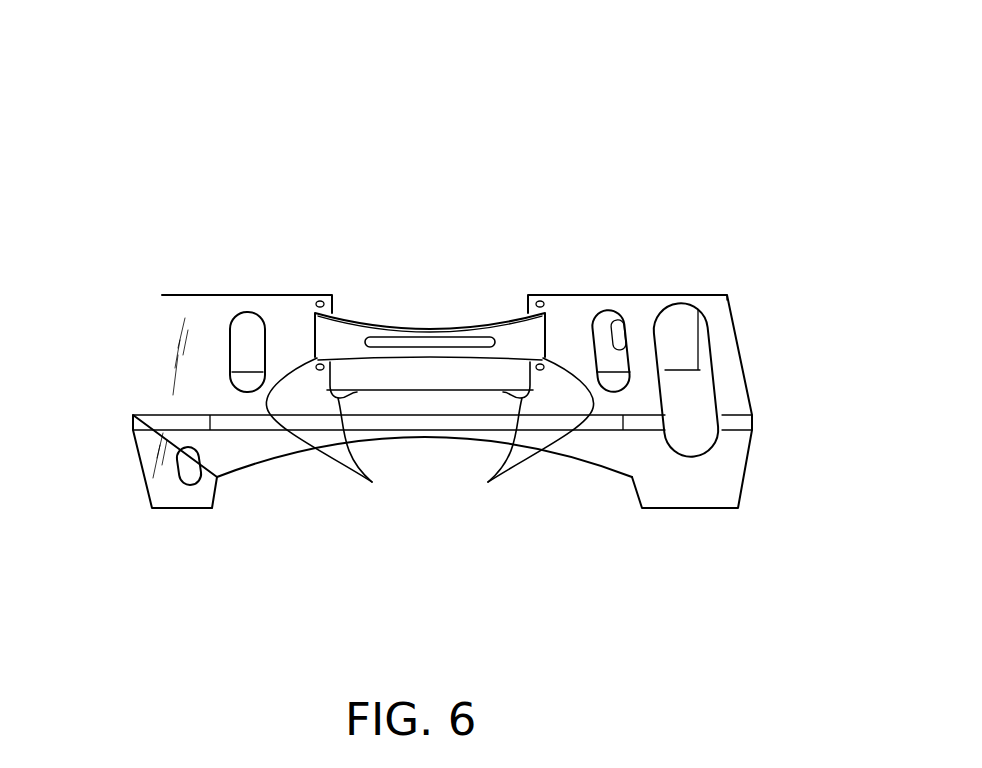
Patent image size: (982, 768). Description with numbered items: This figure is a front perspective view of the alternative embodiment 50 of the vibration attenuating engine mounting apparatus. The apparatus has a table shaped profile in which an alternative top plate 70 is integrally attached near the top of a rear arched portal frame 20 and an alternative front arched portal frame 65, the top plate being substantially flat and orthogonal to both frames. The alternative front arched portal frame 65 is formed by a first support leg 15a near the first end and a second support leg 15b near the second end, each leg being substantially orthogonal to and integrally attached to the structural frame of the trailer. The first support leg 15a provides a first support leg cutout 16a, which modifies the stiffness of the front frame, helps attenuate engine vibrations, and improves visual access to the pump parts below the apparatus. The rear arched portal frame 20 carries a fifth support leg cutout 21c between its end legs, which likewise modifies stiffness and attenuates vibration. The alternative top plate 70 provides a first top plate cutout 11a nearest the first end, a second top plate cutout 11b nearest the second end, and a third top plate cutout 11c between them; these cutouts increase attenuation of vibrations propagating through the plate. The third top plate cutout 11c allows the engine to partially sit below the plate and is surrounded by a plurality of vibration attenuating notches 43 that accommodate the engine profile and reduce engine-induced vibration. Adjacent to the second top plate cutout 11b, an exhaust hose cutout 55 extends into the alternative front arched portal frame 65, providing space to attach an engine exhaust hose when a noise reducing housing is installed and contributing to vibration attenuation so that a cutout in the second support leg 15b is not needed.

The alternative embodiment 50 is at (163, 85).
The alternative top plate 70 is at (185, 305).
The rear arched portal frame 20 is at (498, 333).
The fifth support leg cutout 21c is at (388, 340).
The second top plate cutout 11b is at (610, 378).
The first top plate cutout 11a is at (245, 380).
The exhaust hose cutout 55 is at (688, 407).
The first support leg 15a is at (165, 493).
The second support leg 15b is at (728, 475).
The first support leg cutout 16a is at (187, 477).
The alternative front arched portal frame 65 is at (260, 447).
The vibration attenuating notches 43 is at (429, 437).
The third top plate cutout 11c is at (412, 370).